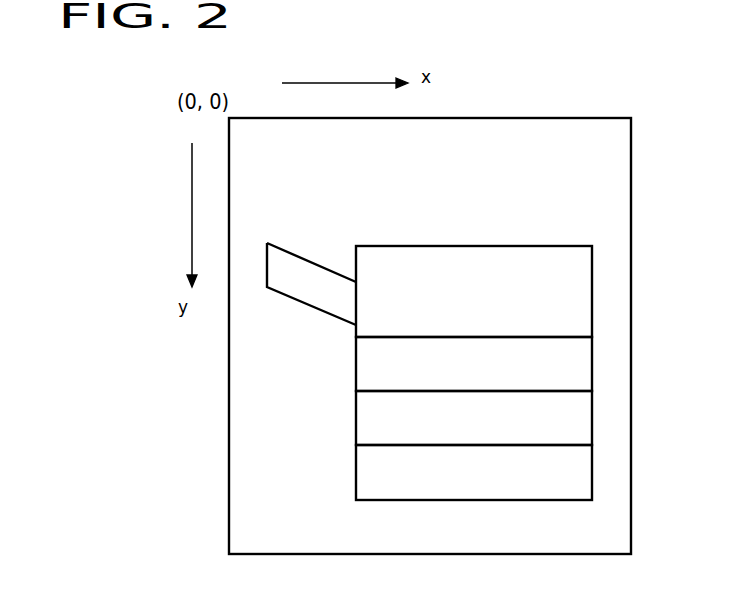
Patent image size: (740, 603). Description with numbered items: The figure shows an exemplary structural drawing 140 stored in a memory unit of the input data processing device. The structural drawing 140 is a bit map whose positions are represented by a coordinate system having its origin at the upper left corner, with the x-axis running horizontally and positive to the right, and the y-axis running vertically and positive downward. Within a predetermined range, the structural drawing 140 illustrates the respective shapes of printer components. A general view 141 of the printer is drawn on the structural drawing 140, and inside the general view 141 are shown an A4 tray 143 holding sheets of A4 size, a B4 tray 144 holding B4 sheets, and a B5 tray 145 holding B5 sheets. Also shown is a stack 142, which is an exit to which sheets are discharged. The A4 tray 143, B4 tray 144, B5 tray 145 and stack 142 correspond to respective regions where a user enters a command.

The structural drawing 140 is at (550, 117).
The general view 141 is at (532, 245).
The stack 142 is at (292, 253).
The A4 tray 143 is at (356, 363).
The B4 tray 144 is at (356, 417).
The B5 tray 145 is at (356, 470).